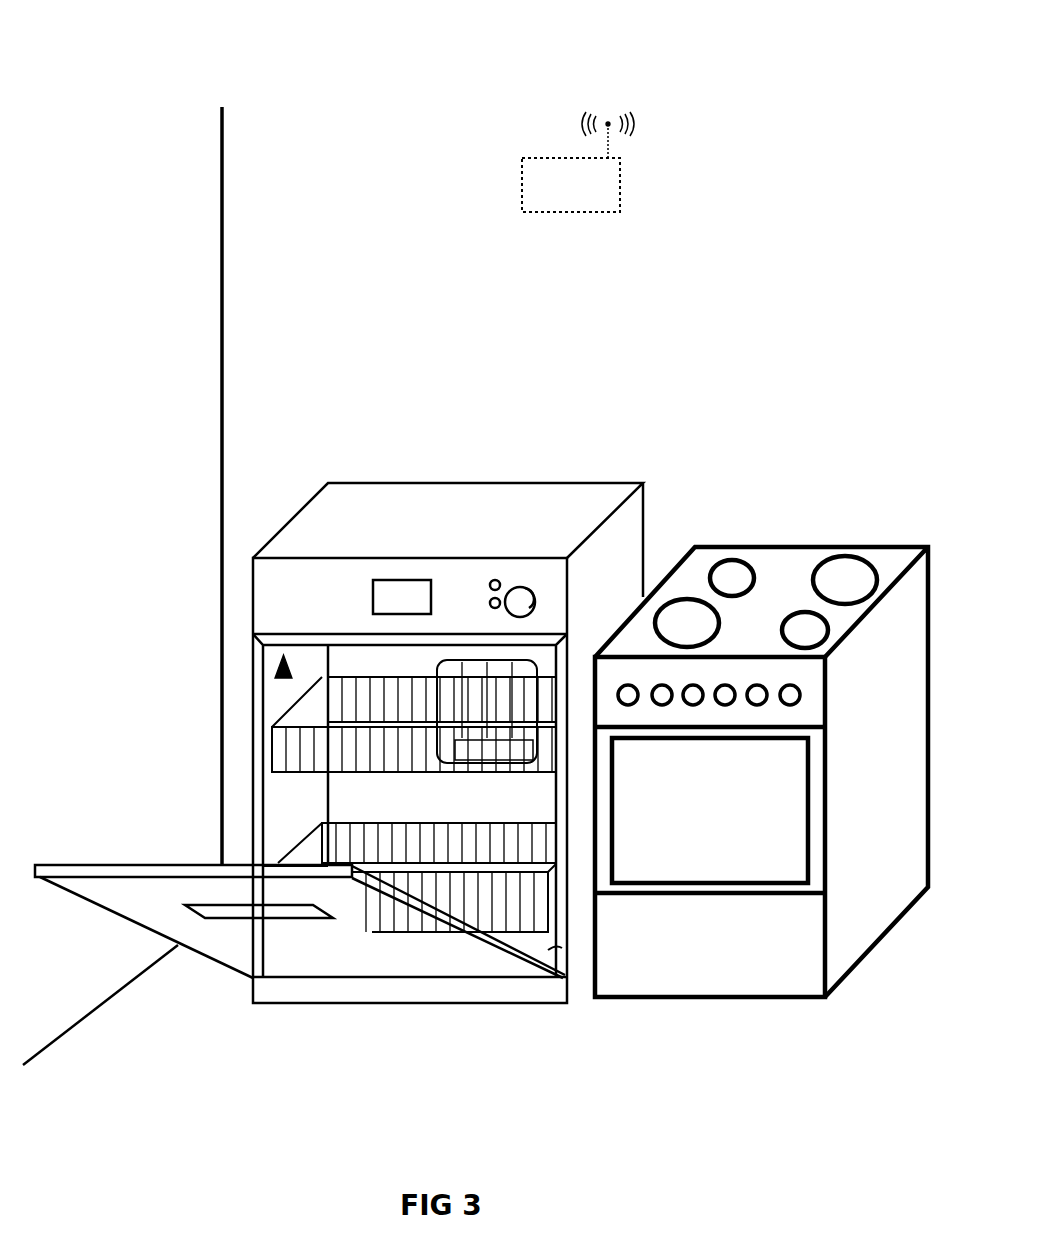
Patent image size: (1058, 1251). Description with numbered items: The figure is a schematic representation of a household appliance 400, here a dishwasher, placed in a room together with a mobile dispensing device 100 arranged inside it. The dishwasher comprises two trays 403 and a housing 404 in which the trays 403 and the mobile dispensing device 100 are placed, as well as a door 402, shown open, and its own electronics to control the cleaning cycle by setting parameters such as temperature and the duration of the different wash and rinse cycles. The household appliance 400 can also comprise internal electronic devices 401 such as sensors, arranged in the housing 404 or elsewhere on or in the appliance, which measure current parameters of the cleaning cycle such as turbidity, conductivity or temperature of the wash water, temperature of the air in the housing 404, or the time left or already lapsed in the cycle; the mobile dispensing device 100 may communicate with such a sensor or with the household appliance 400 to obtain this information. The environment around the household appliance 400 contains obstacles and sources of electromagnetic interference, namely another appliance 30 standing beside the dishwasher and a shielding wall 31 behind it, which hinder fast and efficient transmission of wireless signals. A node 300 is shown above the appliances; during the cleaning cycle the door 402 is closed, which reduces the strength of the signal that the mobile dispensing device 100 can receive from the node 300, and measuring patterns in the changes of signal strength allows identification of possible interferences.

The wall 31 is at (284, 205).
The node 300 is at (615, 192).
The household appliance 400 is at (511, 455).
The other appliance 30 is at (787, 523).
The mobile dispensing device 100 is at (470, 690).
The internal electronic device 401 is at (271, 663).
The tray 403 is at (383, 838).
The housing 404 is at (283, 826).
The door 402 is at (128, 893).